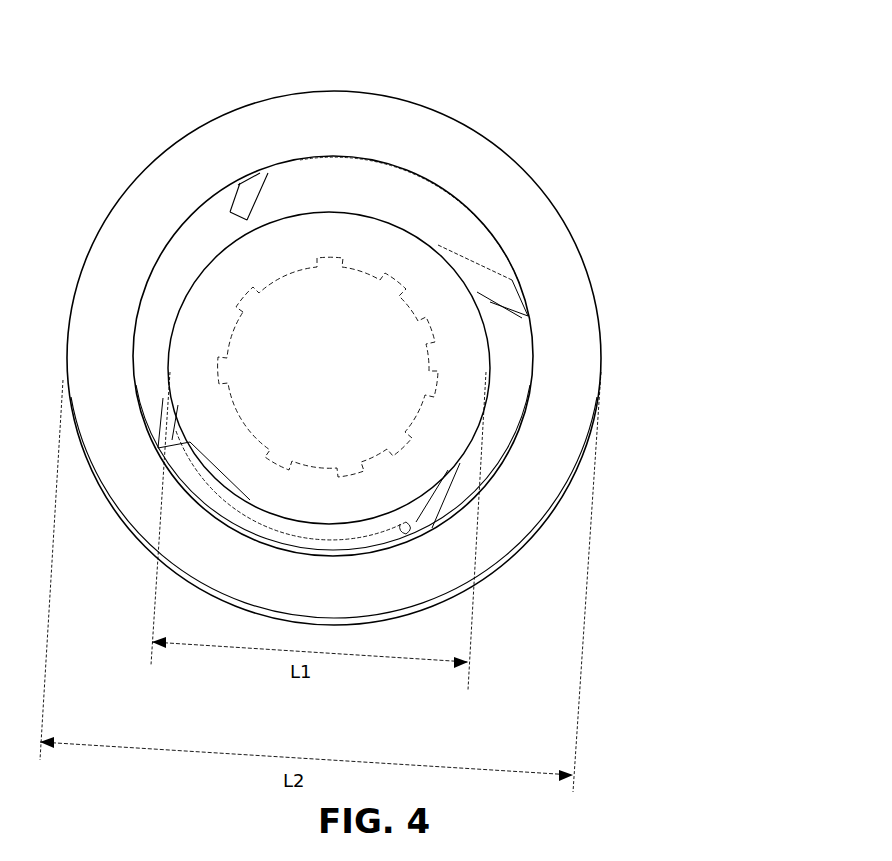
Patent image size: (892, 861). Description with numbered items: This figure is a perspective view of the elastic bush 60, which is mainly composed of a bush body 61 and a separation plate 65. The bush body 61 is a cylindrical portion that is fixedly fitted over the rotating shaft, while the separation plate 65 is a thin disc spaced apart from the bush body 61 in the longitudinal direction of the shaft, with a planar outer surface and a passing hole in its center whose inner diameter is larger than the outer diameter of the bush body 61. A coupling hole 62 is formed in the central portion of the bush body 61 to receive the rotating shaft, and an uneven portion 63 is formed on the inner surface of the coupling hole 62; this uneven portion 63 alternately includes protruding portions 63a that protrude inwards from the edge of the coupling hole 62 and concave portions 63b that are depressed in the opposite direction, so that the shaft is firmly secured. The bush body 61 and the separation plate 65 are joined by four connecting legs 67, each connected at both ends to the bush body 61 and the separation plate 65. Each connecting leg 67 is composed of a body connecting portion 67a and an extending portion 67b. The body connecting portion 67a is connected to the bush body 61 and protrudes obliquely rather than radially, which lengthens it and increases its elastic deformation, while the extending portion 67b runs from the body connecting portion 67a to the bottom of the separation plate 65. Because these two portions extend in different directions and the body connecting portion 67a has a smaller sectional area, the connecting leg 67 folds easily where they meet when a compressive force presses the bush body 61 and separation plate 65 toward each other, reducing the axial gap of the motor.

The elastic bush 60 is at (488, 124).
The bush body 61 is at (468, 407).
The coupling hole 62 is at (342, 383).
The uneven portion 63 is at (670, 332).
The protruding portions 63a is at (437, 335).
The concave portions 63b is at (440, 366).
The separation plate 65 is at (523, 187).
The connecting leg 67 is at (297, 46).
The body connecting portion 67a is at (198, 267).
The extending portion 67b is at (250, 162).